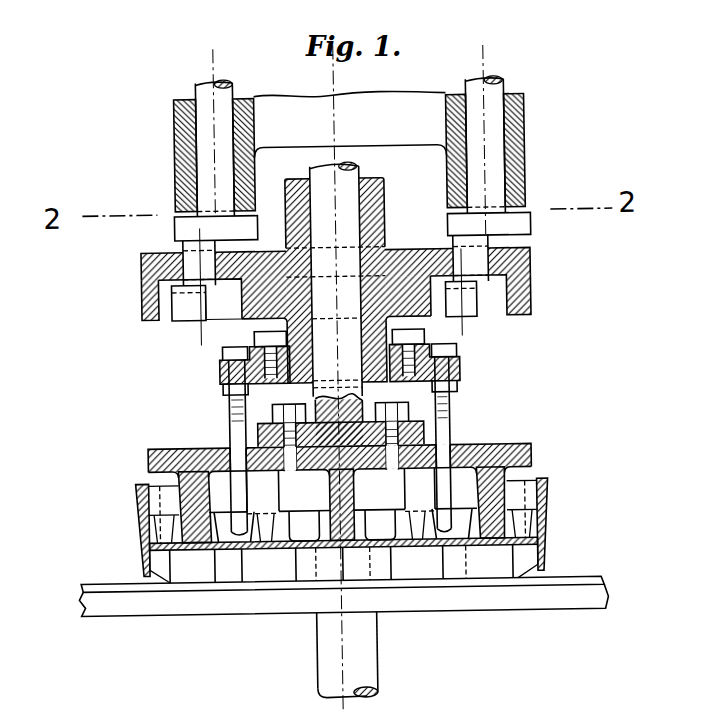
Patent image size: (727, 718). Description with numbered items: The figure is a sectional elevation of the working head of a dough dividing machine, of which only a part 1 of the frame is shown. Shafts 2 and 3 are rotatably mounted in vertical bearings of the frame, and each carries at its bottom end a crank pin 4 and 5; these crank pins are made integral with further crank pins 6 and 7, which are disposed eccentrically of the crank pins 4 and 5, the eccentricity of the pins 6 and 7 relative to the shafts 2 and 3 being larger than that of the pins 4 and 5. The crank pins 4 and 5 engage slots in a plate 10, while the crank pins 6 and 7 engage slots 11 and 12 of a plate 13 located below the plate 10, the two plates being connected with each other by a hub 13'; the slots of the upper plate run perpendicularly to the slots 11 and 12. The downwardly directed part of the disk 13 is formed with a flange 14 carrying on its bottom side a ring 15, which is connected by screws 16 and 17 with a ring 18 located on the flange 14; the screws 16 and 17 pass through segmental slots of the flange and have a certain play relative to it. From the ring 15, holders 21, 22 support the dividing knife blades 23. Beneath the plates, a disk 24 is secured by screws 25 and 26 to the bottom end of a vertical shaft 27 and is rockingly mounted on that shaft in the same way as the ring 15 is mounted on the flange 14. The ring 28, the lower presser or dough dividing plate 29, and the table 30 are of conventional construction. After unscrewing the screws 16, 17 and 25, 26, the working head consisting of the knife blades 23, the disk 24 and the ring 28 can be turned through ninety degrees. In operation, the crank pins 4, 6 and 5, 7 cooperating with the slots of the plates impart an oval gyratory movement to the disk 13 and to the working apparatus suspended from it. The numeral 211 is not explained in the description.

The frame part 1 is at (179, 155).
The shaft 2 is at (231, 81).
The shaft 3 is at (496, 80).
The crank pin 4 is at (194, 244).
The crank pin 5 is at (484, 240).
The crank pin 6 is at (183, 309).
The crank pin 7 is at (476, 319).
The plate 10 is at (158, 261).
The slot 11 is at (222, 313).
The slot 12 is at (492, 307).
The plate 13 is at (130, 302).
The hub 13' is at (362, 280).
The flange 14 is at (284, 358).
The ring 15 is at (223, 375).
The screw 16 is at (256, 333).
The screw 17 is at (414, 343).
The ring 18 is at (452, 345).
The holder 21 is at (229, 424).
The holder 22 is at (450, 422).
The dividing knife blades 23 is at (441, 548).
The disk 24 is at (530, 450).
The screw 25 is at (293, 405).
The screw 26 is at (397, 405).
The vertical shaft 27 is at (340, 183).
The ring 28 is at (545, 517).
The lower presser or dough dividing plate 29 is at (590, 582).
The table 30 is at (542, 593).
The bore 211 is at (227, 452).